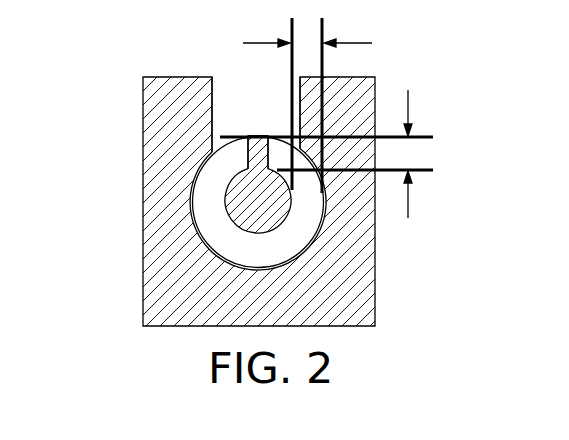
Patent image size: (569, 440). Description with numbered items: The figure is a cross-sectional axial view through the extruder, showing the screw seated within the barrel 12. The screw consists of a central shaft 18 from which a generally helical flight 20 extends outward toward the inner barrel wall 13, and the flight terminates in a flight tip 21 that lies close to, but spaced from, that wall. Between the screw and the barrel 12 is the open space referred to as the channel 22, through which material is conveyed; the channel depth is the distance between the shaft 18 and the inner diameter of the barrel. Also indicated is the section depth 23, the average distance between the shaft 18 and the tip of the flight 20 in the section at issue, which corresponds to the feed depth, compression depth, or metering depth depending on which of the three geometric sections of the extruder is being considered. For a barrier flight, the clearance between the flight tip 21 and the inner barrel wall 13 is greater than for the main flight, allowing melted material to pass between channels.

The barrel 12 is at (375, 280).
The inner barrel wall 13 is at (205, 250).
The shaft 18 is at (233, 192).
The helical flight 20 is at (257, 155).
The flight tip 21 is at (258, 135).
The channel 22 is at (308, 45).
The section depth 23 is at (408, 153).